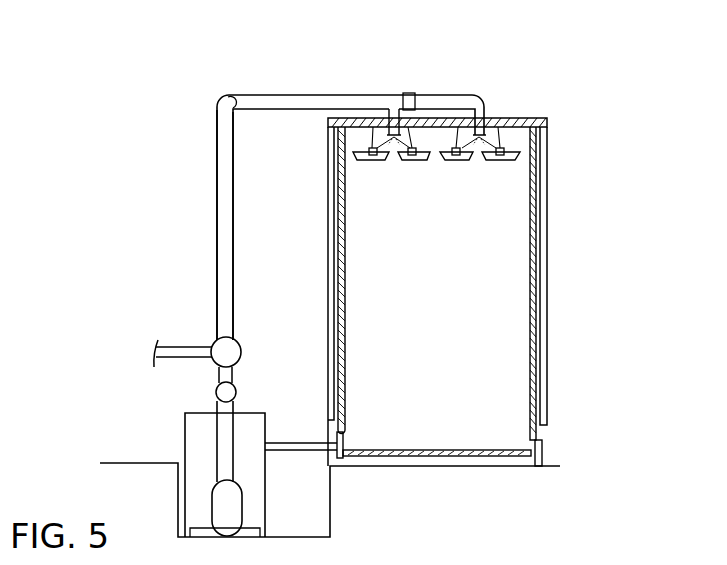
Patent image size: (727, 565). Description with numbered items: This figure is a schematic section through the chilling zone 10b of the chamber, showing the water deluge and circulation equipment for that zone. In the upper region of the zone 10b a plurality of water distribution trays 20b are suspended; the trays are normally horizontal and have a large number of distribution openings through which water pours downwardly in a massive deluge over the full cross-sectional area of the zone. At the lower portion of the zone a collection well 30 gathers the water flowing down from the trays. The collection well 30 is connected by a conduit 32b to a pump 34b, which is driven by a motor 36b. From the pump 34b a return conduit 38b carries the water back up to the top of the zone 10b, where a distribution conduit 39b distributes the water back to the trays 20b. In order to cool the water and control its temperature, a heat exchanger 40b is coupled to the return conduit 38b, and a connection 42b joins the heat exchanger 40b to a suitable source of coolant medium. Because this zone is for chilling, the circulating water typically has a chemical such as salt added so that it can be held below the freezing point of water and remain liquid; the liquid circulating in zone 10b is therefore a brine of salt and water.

The second zone 10b is at (586, 343).
The water distribution tray 20b is at (452, 162).
The collection well 30 is at (486, 450).
The conduit 32b is at (292, 443).
The pump 34b is at (232, 503).
The motor 36b is at (197, 440).
The return conduit 38b is at (217, 242).
The distribution conduit 39b is at (432, 95).
The heat exchanger 40b is at (232, 348).
The inlet pipe 42b is at (183, 345).